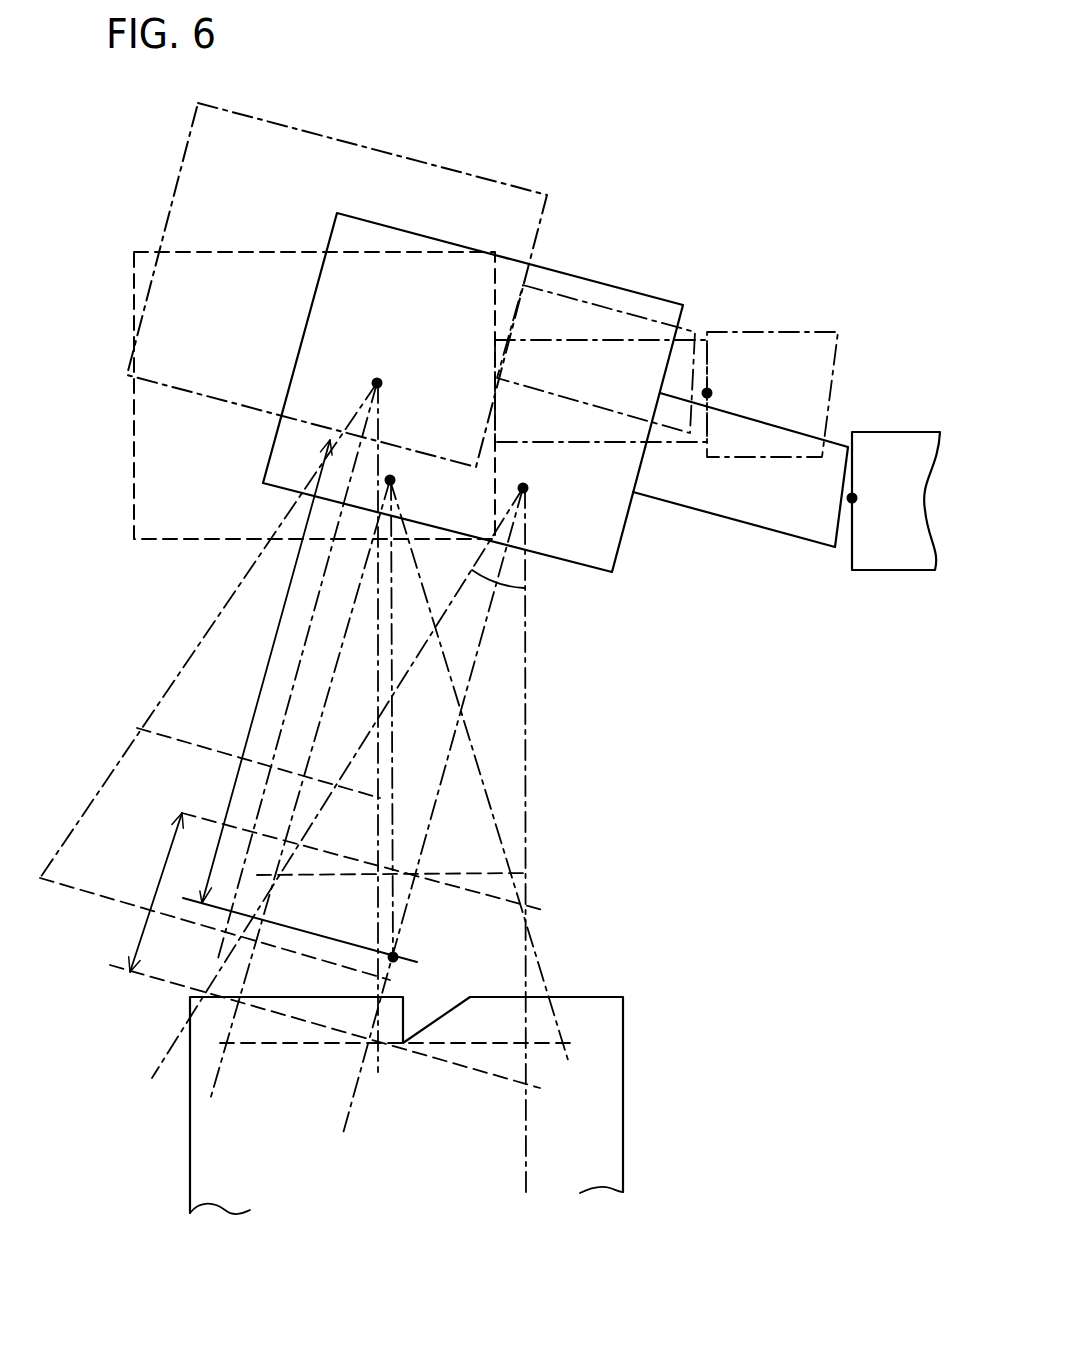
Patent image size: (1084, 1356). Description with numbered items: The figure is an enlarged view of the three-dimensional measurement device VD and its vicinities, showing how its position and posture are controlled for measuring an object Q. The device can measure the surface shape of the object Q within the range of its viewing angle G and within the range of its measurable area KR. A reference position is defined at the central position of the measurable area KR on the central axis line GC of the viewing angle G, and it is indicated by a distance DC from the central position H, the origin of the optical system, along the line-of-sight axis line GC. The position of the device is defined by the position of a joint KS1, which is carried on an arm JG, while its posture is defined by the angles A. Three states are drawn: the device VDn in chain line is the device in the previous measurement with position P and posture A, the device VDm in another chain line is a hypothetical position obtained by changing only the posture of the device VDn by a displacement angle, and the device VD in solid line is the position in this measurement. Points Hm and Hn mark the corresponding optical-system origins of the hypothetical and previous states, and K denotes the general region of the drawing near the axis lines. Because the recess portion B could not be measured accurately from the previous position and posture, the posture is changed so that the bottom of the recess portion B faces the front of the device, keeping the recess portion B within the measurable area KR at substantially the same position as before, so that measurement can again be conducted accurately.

The three-dimensional measurement device VD is at (607, 283).
The three-dimensional measurement device in the previous measurement VDn is at (425, 252).
The hypothetical three-dimensional measurement device position VDm is at (405, 158).
The working implement (boom/arm) JG is at (762, 530).
The joint KS1 is at (707, 393).
The pivot point at position m Hm is at (385, 383).
The pivot point at position n Hn is at (397, 483).
The central position of the optical system H is at (531, 488).
The central axis line of the viewing angle GC is at (428, 828).
The viewing angle G is at (498, 613).
The distance to the reference position DC is at (266, 671).
The measurable area KR is at (326, 950).
The recess portion B is at (443, 1007).
The object Q is at (623, 1043).
The contour K is at (683, 748).